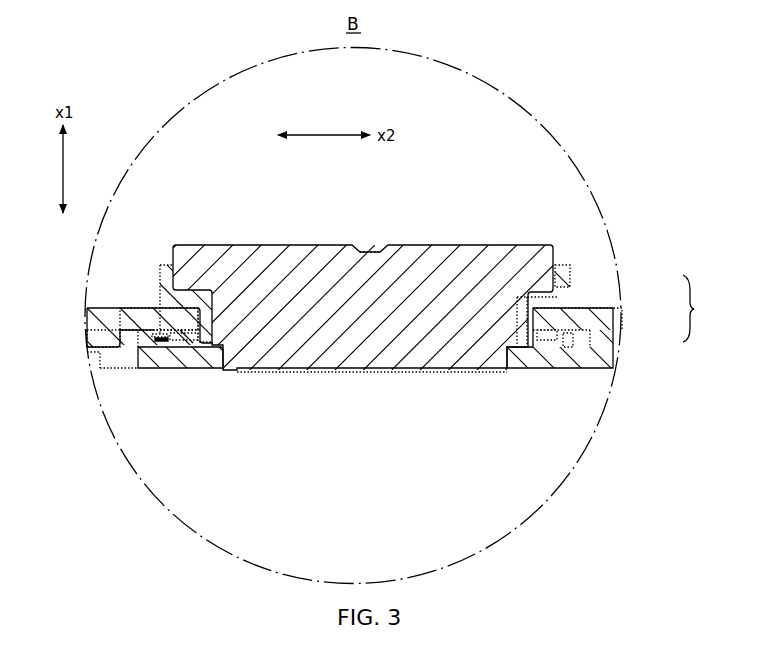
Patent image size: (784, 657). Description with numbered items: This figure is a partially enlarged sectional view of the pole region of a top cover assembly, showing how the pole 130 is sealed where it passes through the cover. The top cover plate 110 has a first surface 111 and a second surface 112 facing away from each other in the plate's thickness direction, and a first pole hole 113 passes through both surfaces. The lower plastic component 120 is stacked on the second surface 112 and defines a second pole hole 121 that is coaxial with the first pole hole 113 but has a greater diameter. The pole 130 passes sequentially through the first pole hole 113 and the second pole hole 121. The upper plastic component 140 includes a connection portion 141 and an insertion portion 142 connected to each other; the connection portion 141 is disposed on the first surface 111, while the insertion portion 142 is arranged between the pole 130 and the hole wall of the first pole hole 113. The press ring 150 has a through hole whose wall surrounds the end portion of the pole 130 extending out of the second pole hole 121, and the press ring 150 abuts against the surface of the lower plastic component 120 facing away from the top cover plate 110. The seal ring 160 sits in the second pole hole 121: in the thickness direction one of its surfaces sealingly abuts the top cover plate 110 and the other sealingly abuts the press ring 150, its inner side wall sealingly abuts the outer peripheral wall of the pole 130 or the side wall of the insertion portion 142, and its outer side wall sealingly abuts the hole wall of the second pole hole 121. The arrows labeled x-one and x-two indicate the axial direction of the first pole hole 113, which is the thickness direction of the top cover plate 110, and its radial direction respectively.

The top cover plate 110 is at (90, 333).
The first surface 111 is at (105, 303).
The second surface 112 is at (101, 352).
The first pole hole 113 is at (194, 320).
The lower plastic component 120 is at (124, 372).
The second pole hole 121 is at (157, 352).
The pole 130 is at (241, 288).
The upper plastic component 140 is at (622, 311).
The connection portion 141 is at (557, 282).
The insertion portion 142 is at (523, 327).
The press ring 150 is at (163, 343).
The seal ring 160 is at (187, 338).